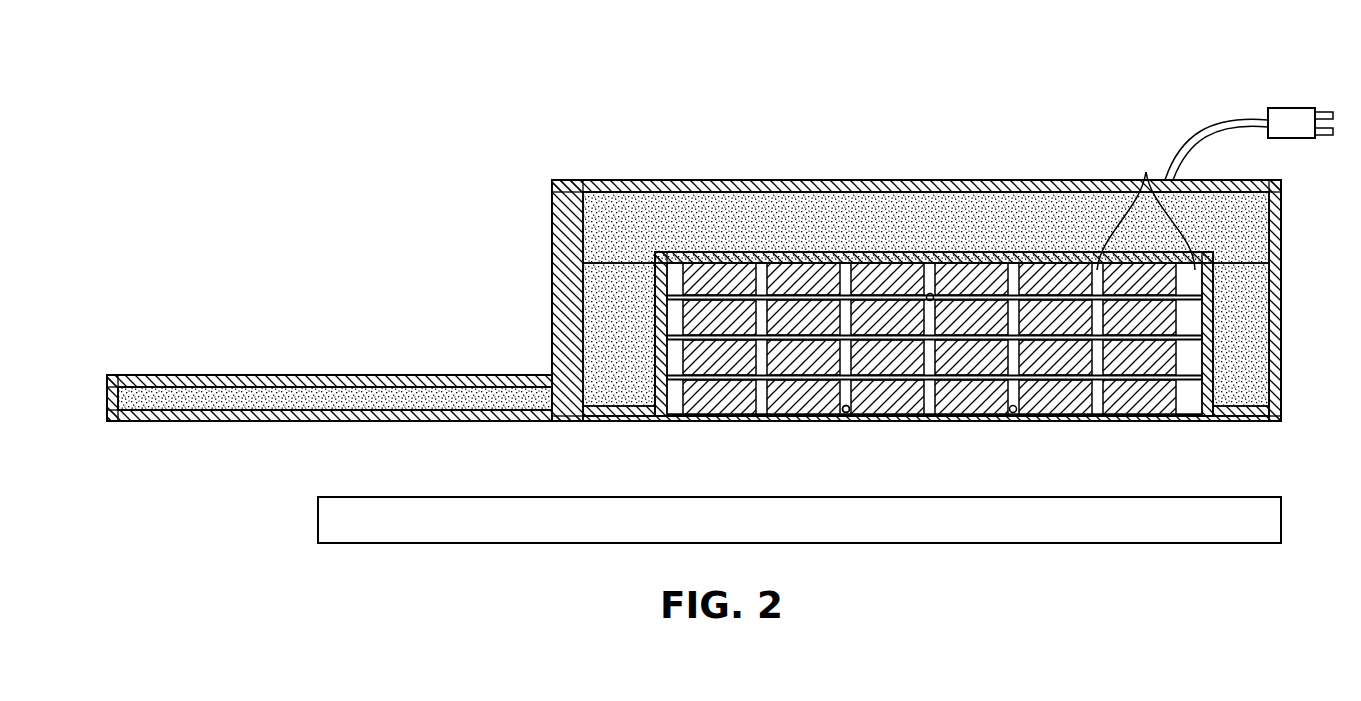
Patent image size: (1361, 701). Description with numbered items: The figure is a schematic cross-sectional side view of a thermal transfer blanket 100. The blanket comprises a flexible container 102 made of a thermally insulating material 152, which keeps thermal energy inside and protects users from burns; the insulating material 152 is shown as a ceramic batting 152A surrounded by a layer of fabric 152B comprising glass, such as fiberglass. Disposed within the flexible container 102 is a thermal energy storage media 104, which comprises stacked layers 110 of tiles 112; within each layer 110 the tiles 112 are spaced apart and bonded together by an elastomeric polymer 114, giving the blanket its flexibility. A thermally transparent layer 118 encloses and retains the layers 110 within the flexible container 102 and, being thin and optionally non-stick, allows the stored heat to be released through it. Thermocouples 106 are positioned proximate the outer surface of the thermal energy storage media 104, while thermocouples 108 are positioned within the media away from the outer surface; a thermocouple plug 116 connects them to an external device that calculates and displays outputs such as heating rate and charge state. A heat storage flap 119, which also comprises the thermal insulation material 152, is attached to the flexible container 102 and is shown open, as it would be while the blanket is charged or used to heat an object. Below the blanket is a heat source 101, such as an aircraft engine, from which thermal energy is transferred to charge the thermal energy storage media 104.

The thermal transfer blanket 100 is at (531, 74).
The heat source 101 is at (318, 522).
The flexible container 102 is at (568, 318).
The thermal energy storage media 104 is at (1115, 412).
The thermocouple 106 is at (850, 410).
The thermocouple 108 is at (927, 293).
The layer 110 is at (1195, 393).
The tile 112 is at (1175, 366).
The elastomeric polymer 114 is at (1146, 172).
The thermocouple plug 116 is at (1288, 108).
The thermally transparent layer 118 is at (843, 412).
The heat storage flap 119 is at (316, 422).
The thermally insulating material 152 is at (733, 296).
The ceramic batting 152A is at (298, 395).
The layer of fabric 152B is at (672, 182).